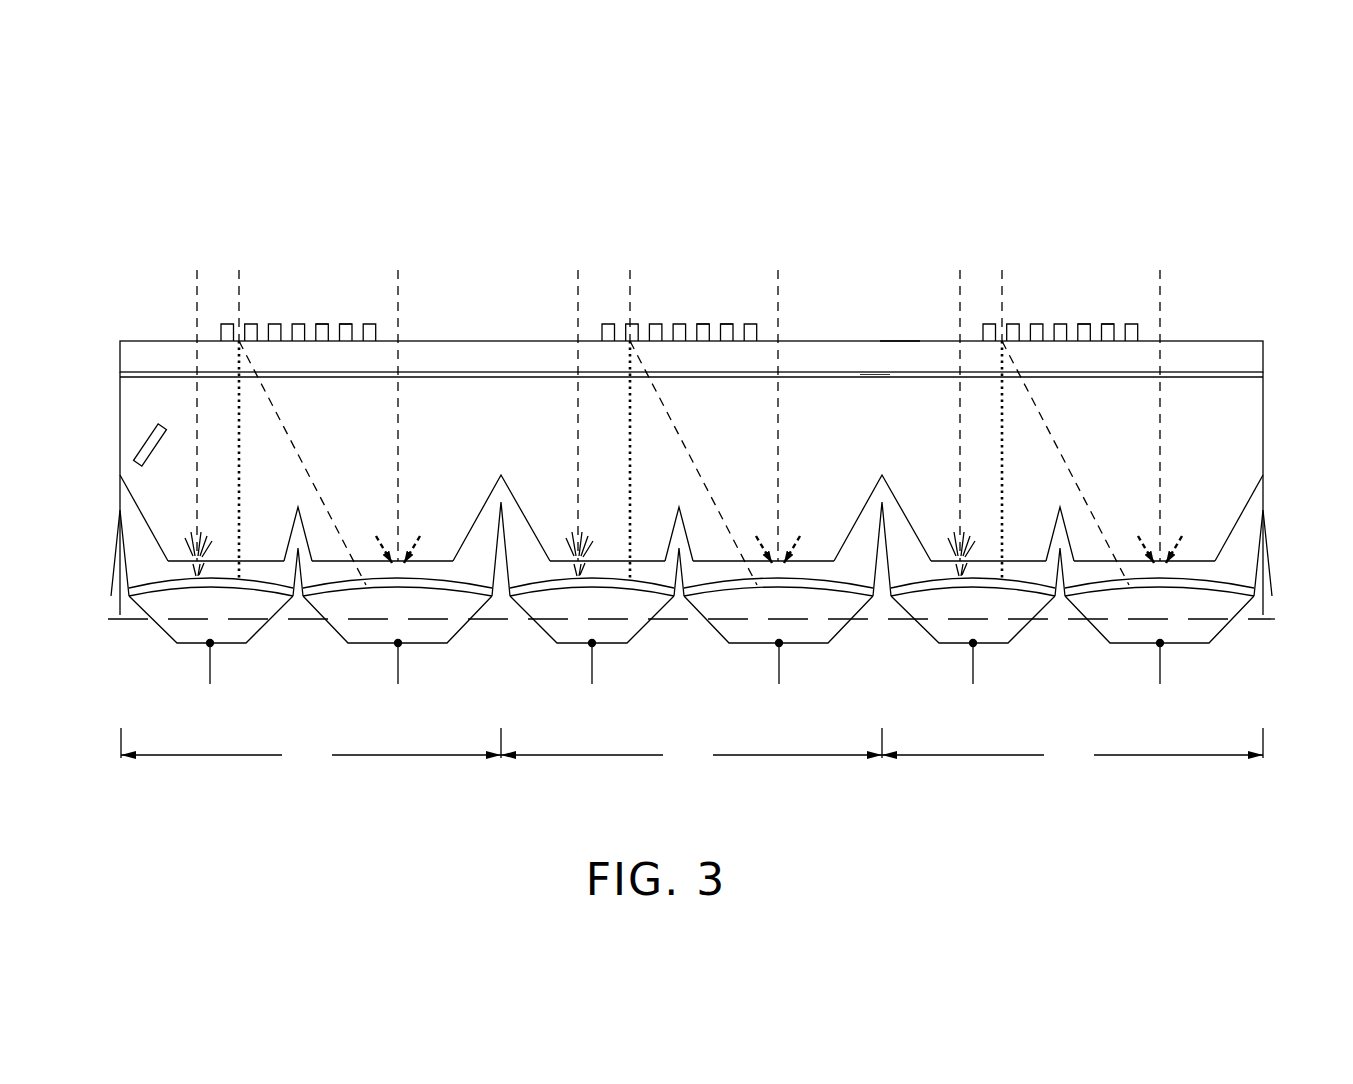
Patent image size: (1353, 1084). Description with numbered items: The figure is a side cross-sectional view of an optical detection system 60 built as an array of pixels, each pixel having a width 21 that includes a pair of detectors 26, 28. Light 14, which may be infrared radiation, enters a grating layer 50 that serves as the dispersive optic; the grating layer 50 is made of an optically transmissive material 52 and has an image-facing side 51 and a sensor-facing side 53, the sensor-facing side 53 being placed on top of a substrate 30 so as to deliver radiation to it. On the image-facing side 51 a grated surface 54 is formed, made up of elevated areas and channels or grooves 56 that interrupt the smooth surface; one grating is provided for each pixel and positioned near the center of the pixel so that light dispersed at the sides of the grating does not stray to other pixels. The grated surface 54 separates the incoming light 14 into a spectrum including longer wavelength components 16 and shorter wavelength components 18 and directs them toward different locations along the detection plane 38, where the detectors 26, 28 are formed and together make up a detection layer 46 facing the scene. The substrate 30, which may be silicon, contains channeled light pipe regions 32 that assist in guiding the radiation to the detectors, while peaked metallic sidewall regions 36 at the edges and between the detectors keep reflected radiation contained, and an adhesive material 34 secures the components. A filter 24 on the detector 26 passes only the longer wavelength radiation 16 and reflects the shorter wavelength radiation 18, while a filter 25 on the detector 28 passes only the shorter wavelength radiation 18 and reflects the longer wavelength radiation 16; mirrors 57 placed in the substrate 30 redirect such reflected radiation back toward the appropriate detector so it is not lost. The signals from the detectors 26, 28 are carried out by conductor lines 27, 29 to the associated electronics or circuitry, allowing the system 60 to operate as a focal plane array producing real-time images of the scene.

The light 14 is at (707, 373).
The longer wavelength components 16 is at (239, 450).
The shorter wavelength components 18 is at (285, 420).
The pixel width 21 is at (692, 747).
The filter 24 is at (200, 585).
The filter 25 is at (382, 585).
The detector 26 is at (260, 632).
The conductor line 27 is at (210, 672).
The detector 28 is at (460, 632).
The conductor line 29 is at (397, 674).
The substrate 30 is at (120, 387).
The light pipe regions 32 is at (690, 498).
The adhesive material 34 is at (130, 573).
The sidewall regions 36 is at (118, 560).
The detection plane 38 is at (115, 622).
The detection layer 46 is at (215, 585).
The grating layer 50 is at (691, 426).
The image-facing side 51 is at (898, 341).
The optically transmissive material 52 is at (487, 341).
The sensor-facing side 53 is at (873, 376).
The grated surface 54 is at (709, 268).
The grooves 56 is at (746, 274).
The mirrors 57 is at (155, 440).
The optical detection system 60 is at (1291, 188).